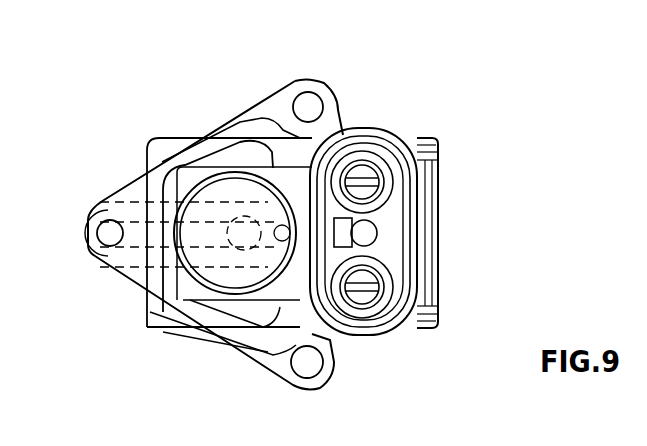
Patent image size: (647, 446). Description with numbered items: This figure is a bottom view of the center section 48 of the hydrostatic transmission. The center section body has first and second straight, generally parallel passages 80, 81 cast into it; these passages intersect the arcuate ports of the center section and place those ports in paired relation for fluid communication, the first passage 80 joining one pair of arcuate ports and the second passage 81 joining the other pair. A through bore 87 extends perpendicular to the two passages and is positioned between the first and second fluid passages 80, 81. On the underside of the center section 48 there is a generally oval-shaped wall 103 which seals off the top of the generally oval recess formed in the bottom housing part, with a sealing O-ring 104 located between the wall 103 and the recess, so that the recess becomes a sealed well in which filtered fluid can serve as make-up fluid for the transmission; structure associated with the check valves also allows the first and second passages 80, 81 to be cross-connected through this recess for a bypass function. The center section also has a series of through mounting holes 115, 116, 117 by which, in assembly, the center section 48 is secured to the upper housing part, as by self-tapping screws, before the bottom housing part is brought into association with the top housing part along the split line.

The center section 48 is at (398, 100).
The first passage 80 is at (297, 307).
The second passage 81 is at (174, 132).
The through bore 87 is at (378, 237).
The oval-shaped wall 103 is at (390, 130).
The sealing O-ring 104 is at (440, 195).
The through mounting hole 115 is at (309, 100).
The through mounting hole 116 is at (112, 232).
The through mounting hole 117 is at (307, 362).